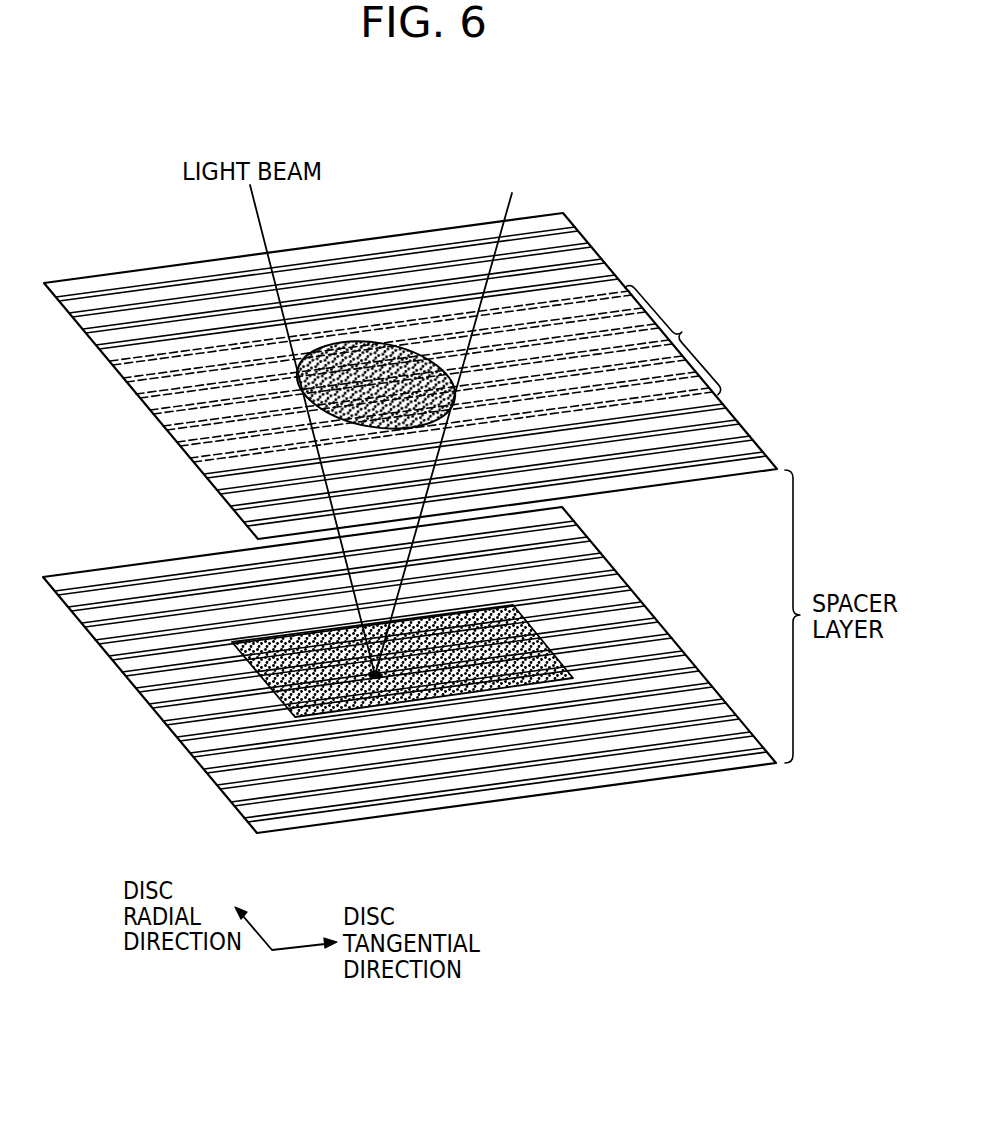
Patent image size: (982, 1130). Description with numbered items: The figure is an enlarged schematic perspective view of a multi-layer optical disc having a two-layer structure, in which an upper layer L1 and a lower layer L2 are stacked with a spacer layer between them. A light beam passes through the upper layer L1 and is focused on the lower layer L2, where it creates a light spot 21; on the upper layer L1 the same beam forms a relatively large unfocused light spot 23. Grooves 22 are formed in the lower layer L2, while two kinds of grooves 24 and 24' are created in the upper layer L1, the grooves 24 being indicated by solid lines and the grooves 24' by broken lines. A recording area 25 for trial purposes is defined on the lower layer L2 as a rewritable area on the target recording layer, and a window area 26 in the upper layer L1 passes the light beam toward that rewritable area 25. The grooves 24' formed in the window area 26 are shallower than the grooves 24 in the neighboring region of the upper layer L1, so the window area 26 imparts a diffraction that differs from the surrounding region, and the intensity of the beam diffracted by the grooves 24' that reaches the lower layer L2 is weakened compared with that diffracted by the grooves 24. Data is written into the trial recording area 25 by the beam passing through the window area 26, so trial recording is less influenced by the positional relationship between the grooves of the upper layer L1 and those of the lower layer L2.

The upper layer L1 is at (115, 370).
The lower layer L2 is at (145, 697).
The light spot 21 is at (387, 688).
The grooves 22 is at (92, 587).
The unfocused light spot 23 is at (376, 352).
The grooves 24 is at (411, 344).
The grooves 24' is at (411, 334).
The recording area for trial purpose 25 is at (503, 683).
The window area 26 is at (734, 336).